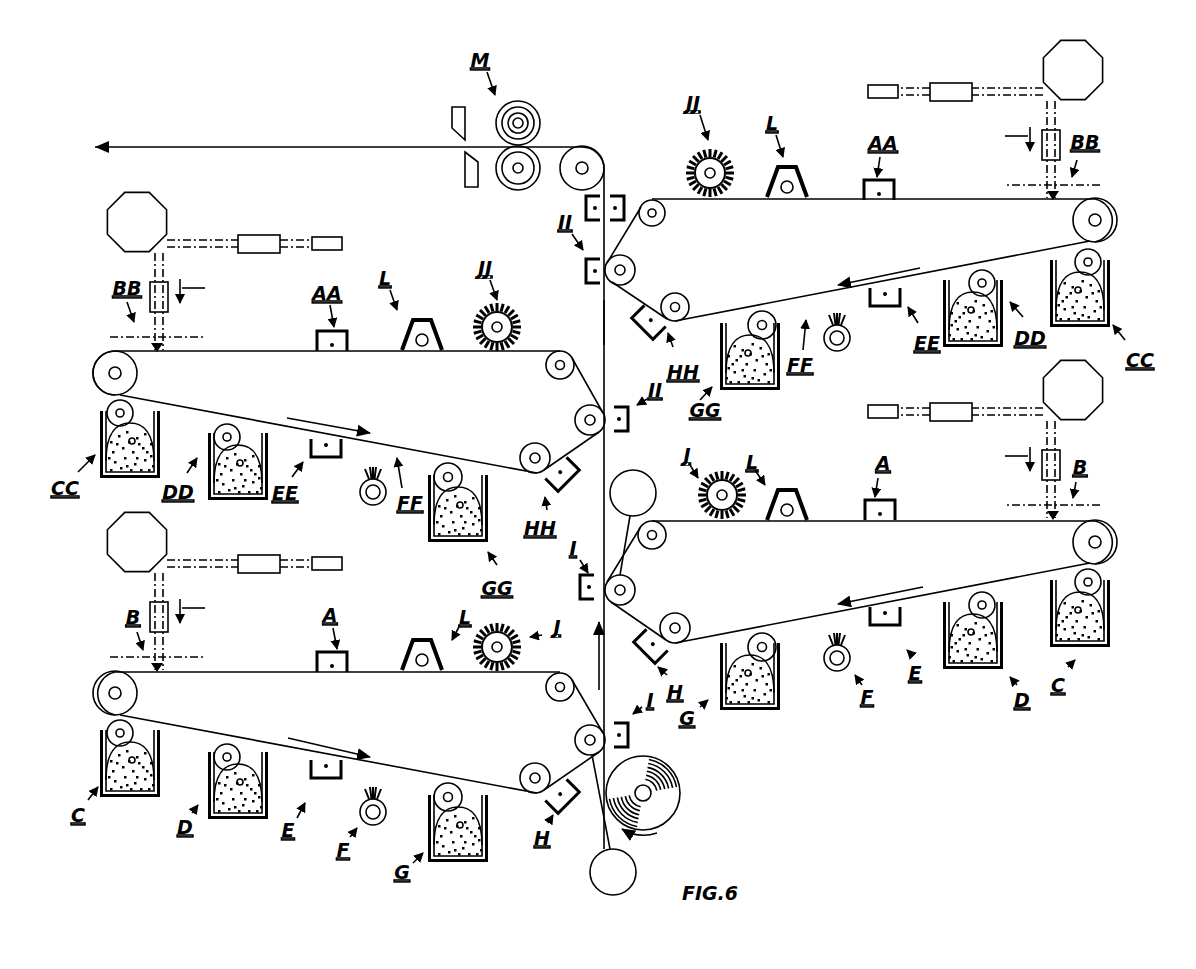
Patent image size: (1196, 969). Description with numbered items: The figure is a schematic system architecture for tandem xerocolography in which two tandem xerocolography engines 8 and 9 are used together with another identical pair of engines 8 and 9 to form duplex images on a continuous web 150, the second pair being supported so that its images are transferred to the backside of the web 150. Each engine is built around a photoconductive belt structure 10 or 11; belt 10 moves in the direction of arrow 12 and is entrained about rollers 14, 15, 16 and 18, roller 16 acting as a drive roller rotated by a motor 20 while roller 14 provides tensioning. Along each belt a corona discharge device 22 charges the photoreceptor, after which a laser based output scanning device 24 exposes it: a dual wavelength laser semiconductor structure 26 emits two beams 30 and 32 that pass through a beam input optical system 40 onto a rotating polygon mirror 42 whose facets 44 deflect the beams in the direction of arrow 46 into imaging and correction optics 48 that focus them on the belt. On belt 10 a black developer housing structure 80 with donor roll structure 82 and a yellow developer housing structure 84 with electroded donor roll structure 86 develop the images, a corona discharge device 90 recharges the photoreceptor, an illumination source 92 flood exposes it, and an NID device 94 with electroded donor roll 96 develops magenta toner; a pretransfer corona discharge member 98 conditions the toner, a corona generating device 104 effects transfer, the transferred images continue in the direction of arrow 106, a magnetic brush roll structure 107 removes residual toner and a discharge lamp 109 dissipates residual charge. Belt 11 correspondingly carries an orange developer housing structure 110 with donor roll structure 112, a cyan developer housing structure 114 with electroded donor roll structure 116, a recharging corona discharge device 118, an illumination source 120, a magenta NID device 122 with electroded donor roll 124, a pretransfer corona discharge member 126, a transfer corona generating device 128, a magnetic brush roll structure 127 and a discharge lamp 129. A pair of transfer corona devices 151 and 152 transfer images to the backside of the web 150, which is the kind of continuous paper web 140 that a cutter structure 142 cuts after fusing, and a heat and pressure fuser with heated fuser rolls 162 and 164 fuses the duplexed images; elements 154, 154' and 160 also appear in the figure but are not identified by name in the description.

The tandem xerocolography engine 8 is at (115, 646).
The tandem xerocolography engine 9 is at (107, 320).
The photoconductive belt structure 10 is at (290, 674).
The photoconductive belt structure 11 is at (400, 447).
The arrow 12 is at (323, 745).
The roller 14 is at (100, 703).
The roller 15 is at (523, 771).
The roller 16 is at (575, 740).
The roller 18 is at (556, 696).
The motor 20 is at (656, 495).
The corona discharge device 22 is at (317, 336).
The laser based output scanning device 24 is at (297, 210).
The dual wavelength laser semiconductor structure 26 is at (330, 243).
The laser beam 30 is at (303, 240).
The laser beam 32 is at (305, 249).
The beam input optical system 40 is at (257, 235).
The rotating polygon mirror 42 is at (148, 208).
The facets 44 is at (162, 242).
The arrow 46 is at (605, 375).
The imaging and correction optics 48 is at (165, 298).
The black developer housing structure 80 is at (123, 798).
The donor roll structure 82 is at (134, 723).
The yellow developer housing structure 84 is at (229, 822).
The electroded donor roll structure 86 is at (242, 748).
The corona discharge device 90 is at (322, 781).
The illumination source 92 is at (377, 828).
The NID device 94 is at (490, 851).
The electroded donor roll 96 is at (452, 790).
The pretransfer corona discharge member 98 is at (568, 805).
The corona generating device 104 is at (633, 735).
The arrow 106 is at (598, 655).
The magnetic brush roll structure 107 is at (497, 673).
The discharge lamp 109 is at (409, 638).
The orange developer housing structure 110 is at (127, 473).
The donor roll structure 112 is at (133, 404).
The cyan developer housing structure 114 is at (227, 501).
The electroded donor roll structure 116 is at (237, 431).
The corona discharge device 118 is at (326, 459).
The illumination source 120 is at (375, 506).
The NID device 122 is at (448, 546).
The electroded donor roll 124 is at (455, 470).
The pretransfer corona discharge member 126 is at (571, 490).
The magnetic brush roll structure 127 is at (506, 311).
The corona generating device 128 is at (631, 421).
The discharge lamp 129 is at (421, 320).
The paper web 140 is at (603, 324).
The cutter structure 142 is at (467, 188).
The web 150 is at (607, 454).
The transfer corona device 151 is at (578, 585).
The transfer corona device 152 is at (585, 268).
The cleaning blade 154 is at (570, 166).
The cleaning blade 154' is at (619, 166).
The roller pair 160 is at (535, 141).
The heated fuser roll 162 is at (534, 112).
The heated fuser roll 164 is at (524, 180).